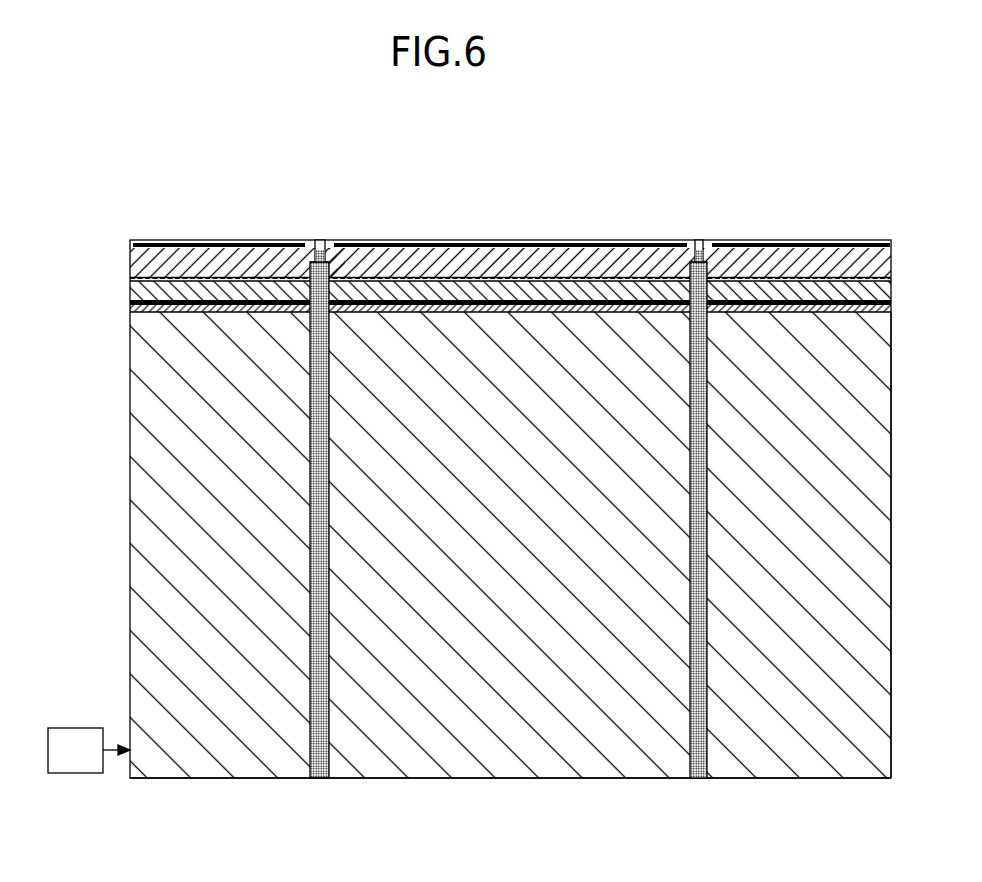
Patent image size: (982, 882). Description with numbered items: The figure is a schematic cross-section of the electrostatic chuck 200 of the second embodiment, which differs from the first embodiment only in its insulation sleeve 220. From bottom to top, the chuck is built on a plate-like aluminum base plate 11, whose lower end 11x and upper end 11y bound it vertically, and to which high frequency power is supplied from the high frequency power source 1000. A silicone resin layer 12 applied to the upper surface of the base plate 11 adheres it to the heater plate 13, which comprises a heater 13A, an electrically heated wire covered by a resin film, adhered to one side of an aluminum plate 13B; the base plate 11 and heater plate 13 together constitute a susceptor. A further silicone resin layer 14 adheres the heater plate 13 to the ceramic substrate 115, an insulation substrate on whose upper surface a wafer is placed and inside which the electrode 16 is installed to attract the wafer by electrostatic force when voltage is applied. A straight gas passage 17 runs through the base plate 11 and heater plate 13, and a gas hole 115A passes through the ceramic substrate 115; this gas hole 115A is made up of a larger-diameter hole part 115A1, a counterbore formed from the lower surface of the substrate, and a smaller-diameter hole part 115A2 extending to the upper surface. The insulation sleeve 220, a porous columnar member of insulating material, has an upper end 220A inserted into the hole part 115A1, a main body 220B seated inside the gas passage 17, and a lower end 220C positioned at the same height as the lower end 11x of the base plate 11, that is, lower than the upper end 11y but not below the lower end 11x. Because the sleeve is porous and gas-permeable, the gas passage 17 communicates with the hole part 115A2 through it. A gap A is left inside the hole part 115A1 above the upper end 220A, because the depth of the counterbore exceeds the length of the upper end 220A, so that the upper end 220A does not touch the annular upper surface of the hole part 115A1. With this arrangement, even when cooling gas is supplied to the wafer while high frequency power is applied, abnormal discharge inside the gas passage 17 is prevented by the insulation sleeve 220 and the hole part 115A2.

The electrostatic chuck 200 is at (826, 214).
The base plate 11 is at (133, 373).
The lower end of base plate 11x is at (866, 779).
The upper end of base plate 11y is at (860, 311).
The silicone resin layer 12 is at (133, 330).
The heater plate 13 is at (448, 302).
The heater 13A is at (133, 304).
The aluminum plate 13B is at (133, 293).
The silicone resin layer 14 is at (133, 278).
The ceramic substrate 115 is at (133, 262).
The gas hole 115A is at (533, 193).
The hole part 115A1 is at (328, 258).
The hole part 115A2 is at (328, 273).
The electrode 16 is at (230, 246).
The gas passage 17 is at (310, 507).
The insulation sleeve 220 is at (376, 512).
The upper end 220A is at (309, 262).
The main body 220B is at (376, 520).
The lower end 220C is at (320, 779).
The gap A is at (322, 251).
The high frequency power source 1000 is at (72, 774).